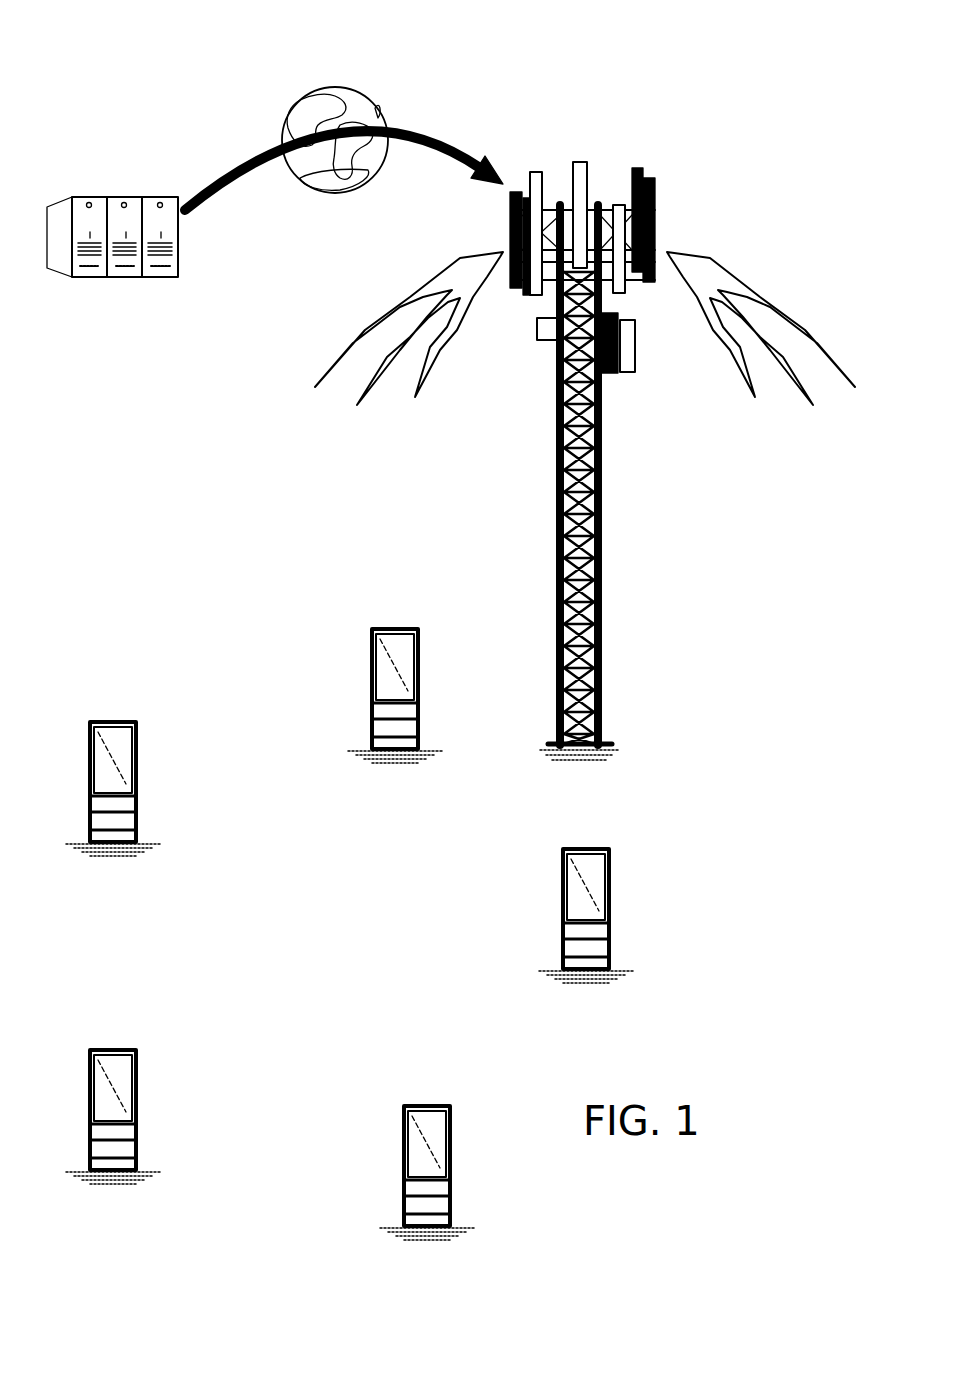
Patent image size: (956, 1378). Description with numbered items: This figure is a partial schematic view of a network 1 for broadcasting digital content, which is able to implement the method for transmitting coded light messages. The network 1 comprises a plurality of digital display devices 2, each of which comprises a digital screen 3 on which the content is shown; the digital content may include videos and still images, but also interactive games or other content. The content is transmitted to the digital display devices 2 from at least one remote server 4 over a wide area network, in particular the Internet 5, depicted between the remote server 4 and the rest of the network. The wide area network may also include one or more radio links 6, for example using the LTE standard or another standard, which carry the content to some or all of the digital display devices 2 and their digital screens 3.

The network 1 is at (784, 171).
The digital display device 2 is at (128, 843).
The digital screen 3 is at (103, 767).
The remote server 4 is at (93, 197).
The Internet 5 is at (315, 88).
The radio link 6 is at (667, 222).